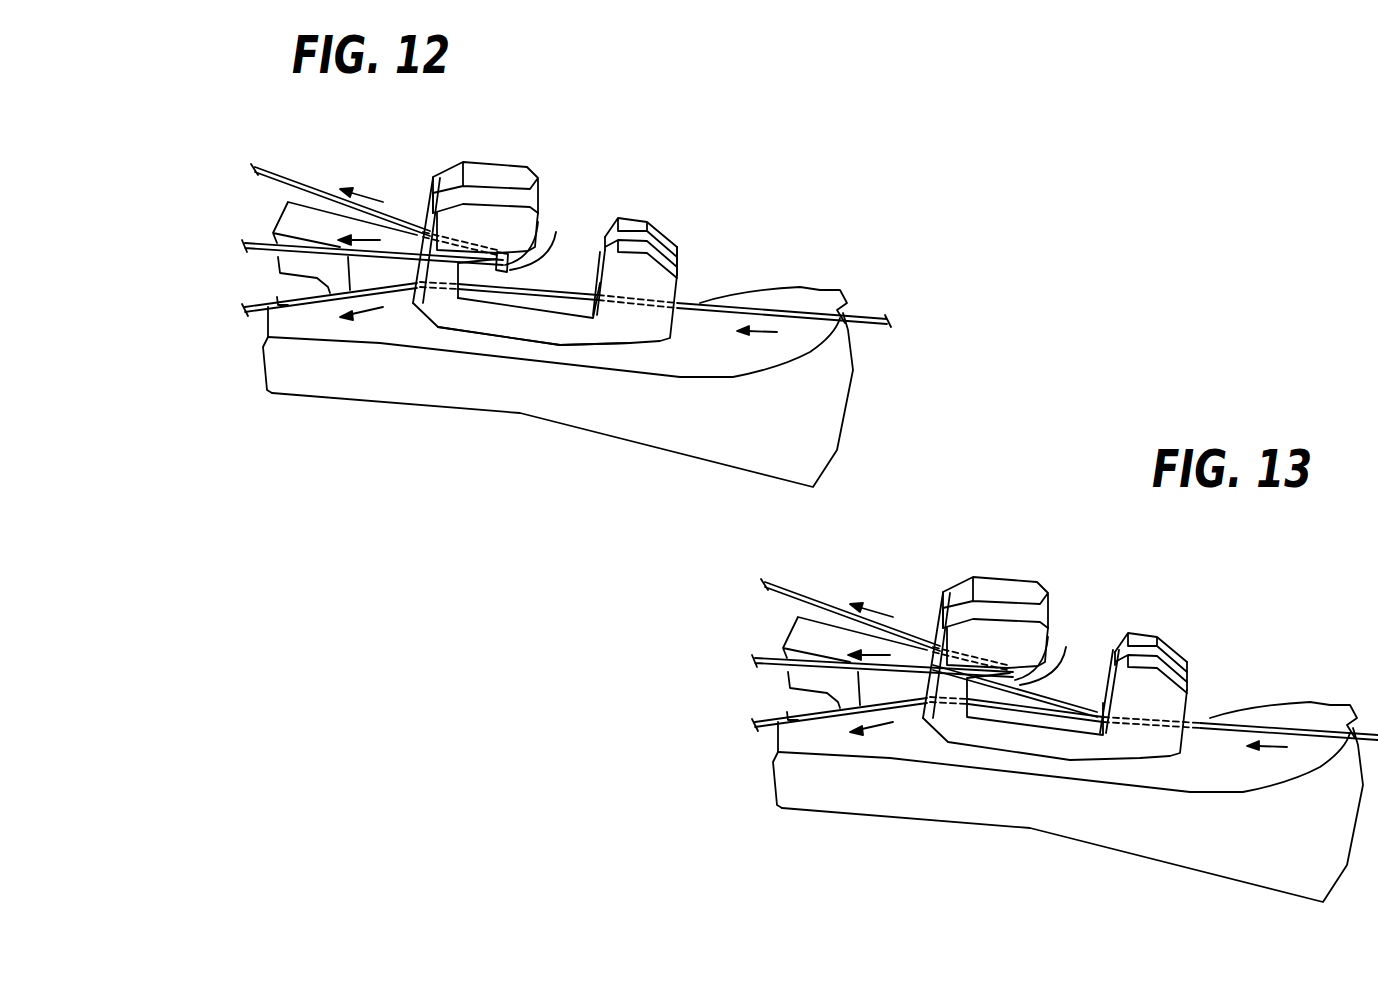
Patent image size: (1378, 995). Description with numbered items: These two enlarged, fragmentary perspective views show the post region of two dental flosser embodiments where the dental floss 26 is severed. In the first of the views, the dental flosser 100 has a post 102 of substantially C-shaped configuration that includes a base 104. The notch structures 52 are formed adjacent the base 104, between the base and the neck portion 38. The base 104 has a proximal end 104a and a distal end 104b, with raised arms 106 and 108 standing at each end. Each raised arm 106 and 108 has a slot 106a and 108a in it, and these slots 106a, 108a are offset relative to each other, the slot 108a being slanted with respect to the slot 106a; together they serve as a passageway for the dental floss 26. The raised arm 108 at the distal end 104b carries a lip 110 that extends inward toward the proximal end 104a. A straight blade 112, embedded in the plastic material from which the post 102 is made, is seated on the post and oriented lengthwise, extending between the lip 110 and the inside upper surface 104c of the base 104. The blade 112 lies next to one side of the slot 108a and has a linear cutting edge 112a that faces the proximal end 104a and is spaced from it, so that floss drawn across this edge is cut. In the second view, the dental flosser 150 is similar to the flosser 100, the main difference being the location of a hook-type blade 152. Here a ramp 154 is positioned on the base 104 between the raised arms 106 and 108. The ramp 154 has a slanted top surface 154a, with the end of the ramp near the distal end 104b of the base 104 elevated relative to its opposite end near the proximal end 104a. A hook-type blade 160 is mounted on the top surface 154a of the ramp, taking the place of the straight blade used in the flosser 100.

In FIG. 12, the dental floss 26 is at (290, 303).
In FIG. 13, the dental floss 26 is at (1054, 659).
In FIG. 12, the neck portion 38 is at (407, 387).
In FIG. 13, the neck portion 38 is at (1068, 802).
In FIG. 12, the notch structures 52 is at (413, 320).
In FIG. 13, the notch structures 52 is at (1002, 725).
In FIG. 12, the dental flosser 100 is at (505, 153).
In FIG. 12, the post 102 is at (685, 243).
In FIG. 12, the base 104 is at (560, 330).
In FIG. 13, the base 104 is at (1055, 763).
In FIG. 12, the proximal end 104a is at (627, 317).
In FIG. 12, the distal end 104b is at (430, 200).
In FIG. 12, the inside upper surface 104c is at (527, 300).
In FIG. 12, the raised arm 106 is at (660, 283).
In FIG. 13, the raised arm 106 is at (1213, 658).
In FIG. 12, the slot 106a is at (640, 237).
In FIG. 13, the slot 106a is at (1211, 629).
In FIG. 12, the raised arm 108 is at (443, 178).
In FIG. 13, the raised arm 108 is at (995, 601).
In FIG. 12, the slot 108a is at (510, 187).
In FIG. 13, the slot 108a is at (1022, 589).
In FIG. 12, the lip 110 is at (553, 230).
In FIG. 12, the straight blade 112 is at (520, 272).
In FIG. 12, the linear cutting edge 112a is at (560, 257).
In FIG. 13, the dental flosser 150 is at (1064, 568).
In FIG. 13, the hook-type blade 152 is at (1022, 666).
In FIG. 13, the ramp 154 is at (1034, 745).
In FIG. 13, the slanted top surface 154a is at (1148, 657).
In FIG. 13, the hook-type blade 160 is at (1060, 633).